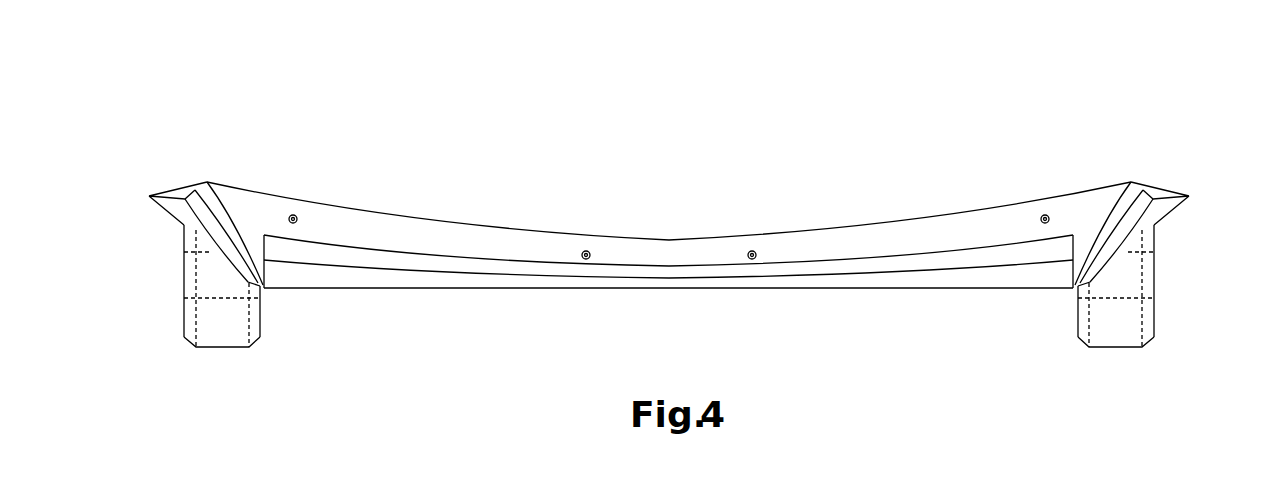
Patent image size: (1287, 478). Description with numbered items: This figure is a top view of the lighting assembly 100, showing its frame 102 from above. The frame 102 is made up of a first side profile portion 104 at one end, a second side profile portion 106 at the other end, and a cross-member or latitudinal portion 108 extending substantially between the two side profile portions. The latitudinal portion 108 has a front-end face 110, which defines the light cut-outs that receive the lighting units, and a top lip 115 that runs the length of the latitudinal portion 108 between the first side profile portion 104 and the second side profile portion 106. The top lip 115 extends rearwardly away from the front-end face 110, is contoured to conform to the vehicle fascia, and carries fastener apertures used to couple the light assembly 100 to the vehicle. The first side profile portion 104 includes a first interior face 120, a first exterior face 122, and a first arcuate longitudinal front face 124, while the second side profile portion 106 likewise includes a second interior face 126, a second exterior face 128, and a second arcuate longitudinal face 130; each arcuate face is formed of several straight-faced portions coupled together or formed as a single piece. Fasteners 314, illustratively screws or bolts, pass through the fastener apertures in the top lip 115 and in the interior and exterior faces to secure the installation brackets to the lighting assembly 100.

The lighting assembly 100 is at (605, 150).
The frame 102 is at (935, 238).
The first side profile portion 104 is at (1147, 303).
The second side profile portion 106 is at (233, 335).
The latitudinal portion 108 is at (445, 237).
The front-end face 110 is at (800, 290).
The top lip 115 is at (875, 238).
The first interior face 120 is at (1082, 315).
The first exterior face 122 is at (1147, 273).
The first arcuate longitudinal front face 124 is at (1117, 330).
The second interior face 126 is at (257, 317).
The second exterior face 128 is at (190, 315).
The second arcuate longitudinal face 130 is at (213, 330).
The fastener 314 is at (295, 213).